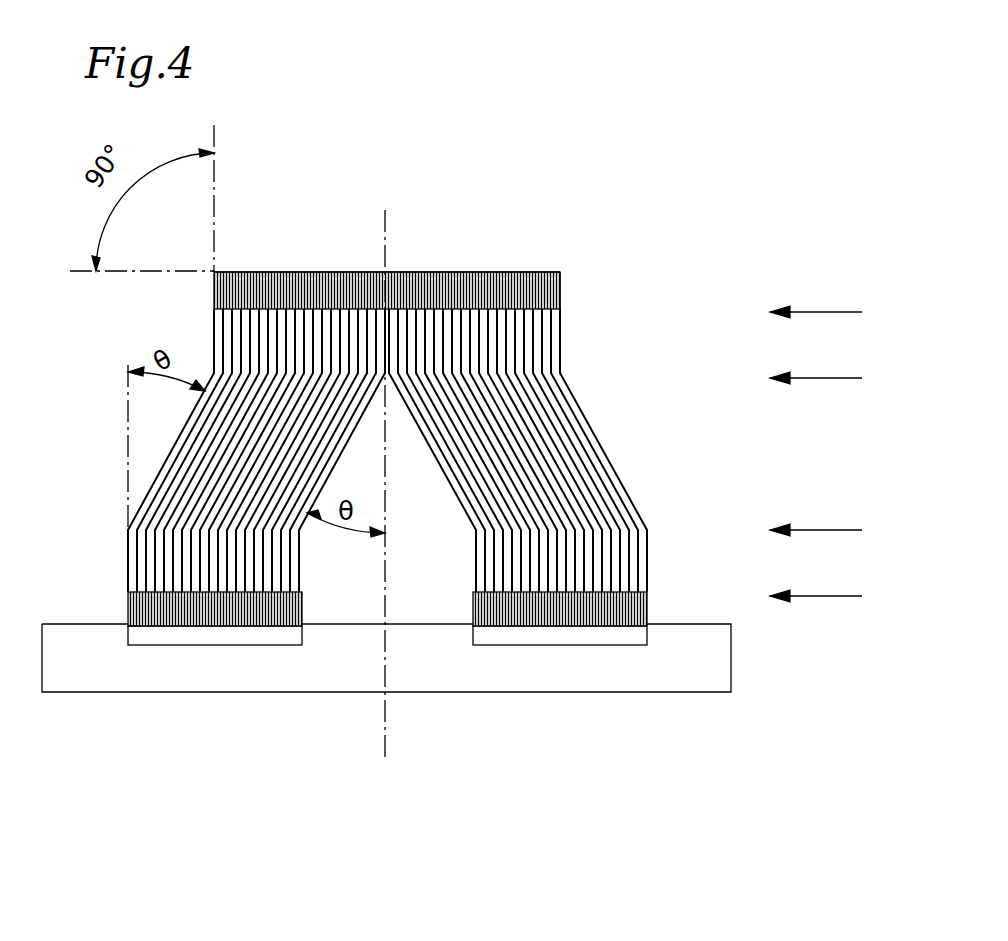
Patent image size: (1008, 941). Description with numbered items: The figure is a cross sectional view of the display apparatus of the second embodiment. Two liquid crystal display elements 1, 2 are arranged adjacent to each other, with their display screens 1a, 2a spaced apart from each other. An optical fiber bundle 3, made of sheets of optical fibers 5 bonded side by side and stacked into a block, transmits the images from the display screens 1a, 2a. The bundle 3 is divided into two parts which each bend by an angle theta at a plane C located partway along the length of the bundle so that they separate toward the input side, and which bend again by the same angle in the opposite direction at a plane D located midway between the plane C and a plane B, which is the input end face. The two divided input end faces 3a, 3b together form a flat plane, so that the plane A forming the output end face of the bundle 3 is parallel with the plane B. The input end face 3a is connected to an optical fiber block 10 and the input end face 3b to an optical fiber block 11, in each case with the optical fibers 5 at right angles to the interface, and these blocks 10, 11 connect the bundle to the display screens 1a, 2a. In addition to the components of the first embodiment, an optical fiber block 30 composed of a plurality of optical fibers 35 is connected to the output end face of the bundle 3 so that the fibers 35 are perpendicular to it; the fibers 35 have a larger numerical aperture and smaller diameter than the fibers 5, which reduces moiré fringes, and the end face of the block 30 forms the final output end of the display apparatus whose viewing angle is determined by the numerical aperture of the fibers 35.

The liquid crystal display element 1 is at (72, 694).
The display screen 1a is at (207, 633).
The liquid crystal display element 2 is at (691, 694).
The display screen 2a is at (567, 633).
The optical fiber bundle 3 is at (376, 450).
The input end face 3a is at (170, 590).
The input end face 3b is at (594, 575).
The optical fiber 5 is at (300, 308).
The optical fiber block 10 is at (137, 598).
The optical fiber block 11 is at (637, 606).
The optical fiber block 30 is at (562, 294).
The optical fiber 35 is at (518, 273).
The plane A is at (832, 313).
The plane B is at (832, 597).
The plane C is at (832, 379).
The plane D is at (833, 531).